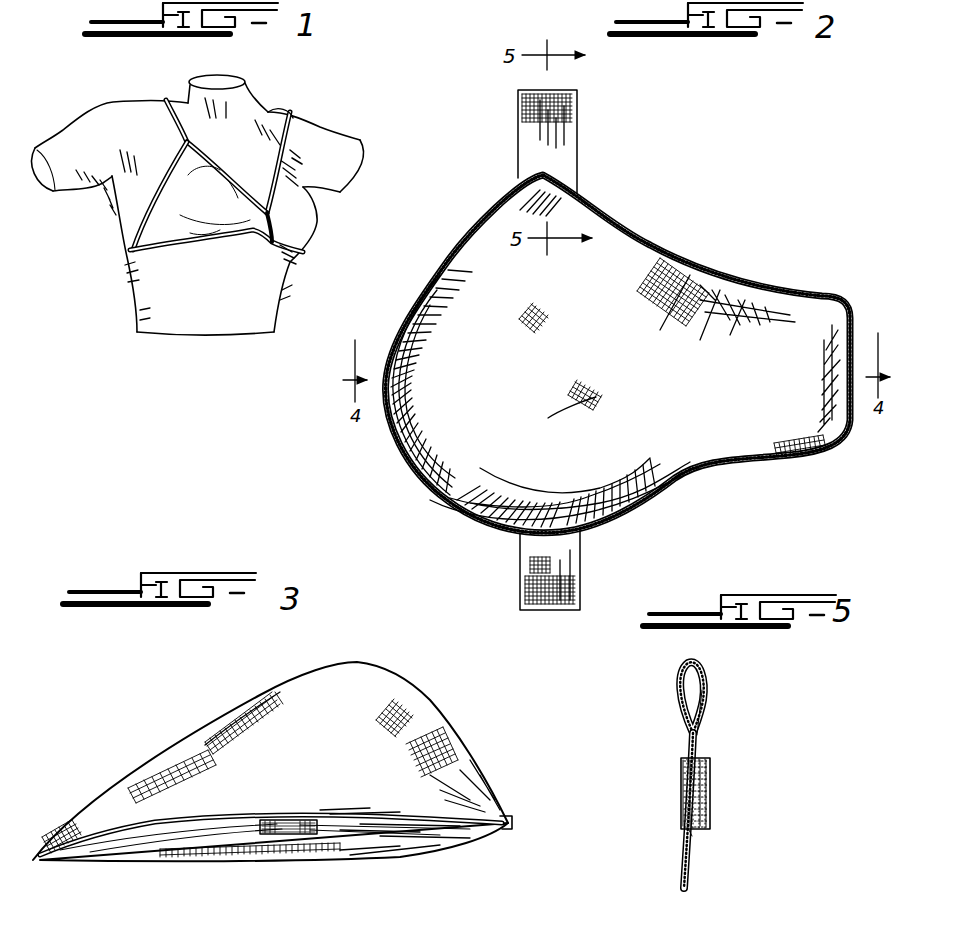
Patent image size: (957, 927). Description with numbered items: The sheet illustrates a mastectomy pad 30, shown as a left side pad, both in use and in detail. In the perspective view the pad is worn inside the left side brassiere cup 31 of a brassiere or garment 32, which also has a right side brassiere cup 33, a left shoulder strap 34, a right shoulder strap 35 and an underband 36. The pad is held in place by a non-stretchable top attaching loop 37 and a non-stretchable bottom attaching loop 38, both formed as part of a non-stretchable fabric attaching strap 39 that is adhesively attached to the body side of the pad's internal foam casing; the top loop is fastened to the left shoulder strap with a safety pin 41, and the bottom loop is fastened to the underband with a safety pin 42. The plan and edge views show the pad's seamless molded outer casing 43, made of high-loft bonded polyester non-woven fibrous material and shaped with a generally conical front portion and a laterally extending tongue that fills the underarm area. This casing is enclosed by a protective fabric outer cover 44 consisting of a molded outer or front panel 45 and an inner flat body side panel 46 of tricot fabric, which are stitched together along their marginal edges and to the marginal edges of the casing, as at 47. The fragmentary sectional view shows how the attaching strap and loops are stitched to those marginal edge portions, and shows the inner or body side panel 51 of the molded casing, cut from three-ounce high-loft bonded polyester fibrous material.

In FIG. 2, the mastectomy pad 30 is at (668, 248).
In FIG. 3, the mastectomy pad 30 is at (420, 680).
In FIG. 1, the left side brassiere cup 31 is at (306, 221).
In FIG. 1, the brassiere or garment 32 is at (184, 196).
In FIG. 1, the right side brassiere cup 33 is at (153, 235).
In FIG. 1, the left shoulder strap 34 is at (287, 135).
In FIG. 1, the right shoulder strap 35 is at (178, 124).
In FIG. 1, the underband 36 is at (238, 242).
In FIG. 2, the top attaching loop 37 is at (567, 156).
In FIG. 3, the top attaching loop 37 is at (302, 835).
In FIG. 5, the top attaching loop 37 is at (683, 690).
In FIG. 2, the bottom attaching loop 38 is at (550, 600).
In FIG. 5, the bottom attaching loop 38 is at (698, 872).
In FIG. 2, the attaching strap 39 is at (585, 570).
In FIG. 5, the attaching strap 39 is at (704, 716).
In FIG. 1, the safety pin 41 is at (297, 162).
In FIG. 1, the safety pin 42 is at (285, 254).
In FIG. 5, the seamless molded outer casing 43 is at (705, 838).
In FIG. 2, the protective fabric outer cover 44 is at (737, 436).
In FIG. 3, the protective fabric outer cover 44 is at (336, 688).
In FIG. 5, the protective fabric outer cover 44 is at (714, 767).
In FIG. 2, the molded outer or front panel 45 is at (463, 496).
In FIG. 3, the molded outer or front panel 45 is at (423, 718).
In FIG. 5, the molded outer or front panel 45 is at (711, 783).
In FIG. 3, the inner flat or body side panel 46 is at (388, 838).
In FIG. 5, the inner flat or body side panel 46 is at (685, 828).
In FIG. 2, the stitching 47 is at (795, 462).
In FIG. 5, the stitching 47 is at (709, 797).
In FIG. 5, the inner or body side panel 51 is at (688, 813).